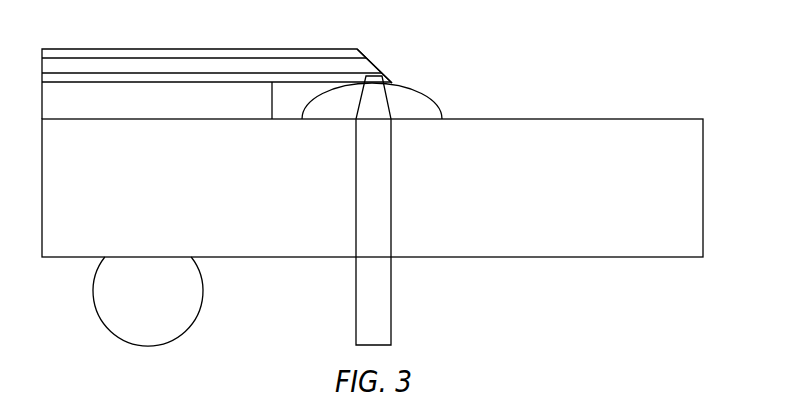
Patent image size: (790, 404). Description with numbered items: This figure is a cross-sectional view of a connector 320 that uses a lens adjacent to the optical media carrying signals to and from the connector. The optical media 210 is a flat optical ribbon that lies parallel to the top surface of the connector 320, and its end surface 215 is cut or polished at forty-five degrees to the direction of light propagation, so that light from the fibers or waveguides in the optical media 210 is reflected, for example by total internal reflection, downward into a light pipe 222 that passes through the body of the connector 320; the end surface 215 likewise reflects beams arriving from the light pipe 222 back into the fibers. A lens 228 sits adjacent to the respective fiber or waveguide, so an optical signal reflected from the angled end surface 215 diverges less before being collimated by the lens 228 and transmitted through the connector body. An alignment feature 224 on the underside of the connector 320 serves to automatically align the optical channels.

The optical media 210 is at (147, 48).
The end surface 215 is at (371, 63).
The lens 228 is at (428, 95).
The light pipe 222 is at (392, 187).
The connector 320 is at (215, 199).
The alignment feature 224 is at (162, 303).